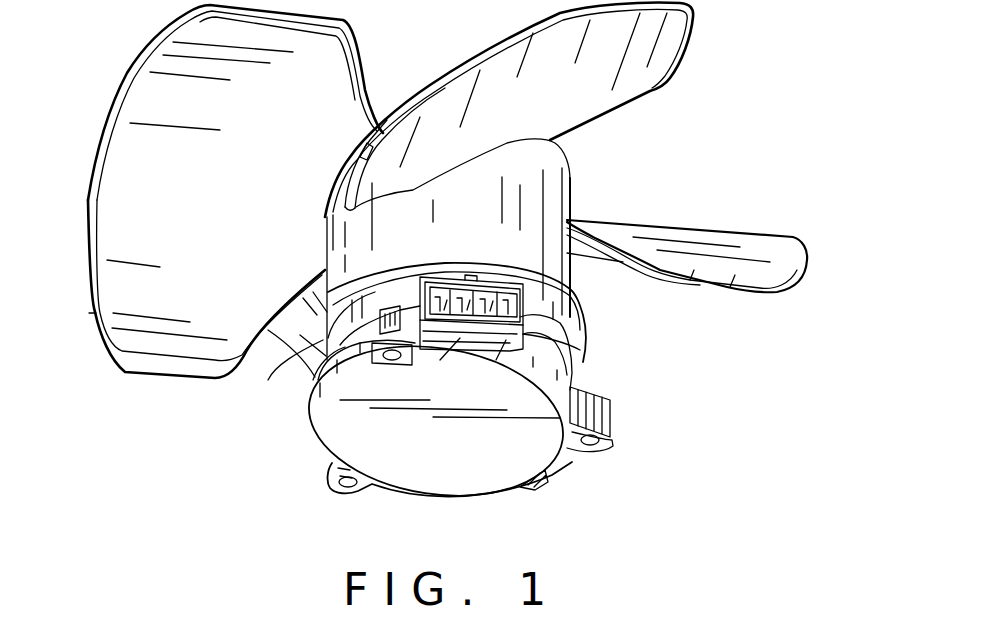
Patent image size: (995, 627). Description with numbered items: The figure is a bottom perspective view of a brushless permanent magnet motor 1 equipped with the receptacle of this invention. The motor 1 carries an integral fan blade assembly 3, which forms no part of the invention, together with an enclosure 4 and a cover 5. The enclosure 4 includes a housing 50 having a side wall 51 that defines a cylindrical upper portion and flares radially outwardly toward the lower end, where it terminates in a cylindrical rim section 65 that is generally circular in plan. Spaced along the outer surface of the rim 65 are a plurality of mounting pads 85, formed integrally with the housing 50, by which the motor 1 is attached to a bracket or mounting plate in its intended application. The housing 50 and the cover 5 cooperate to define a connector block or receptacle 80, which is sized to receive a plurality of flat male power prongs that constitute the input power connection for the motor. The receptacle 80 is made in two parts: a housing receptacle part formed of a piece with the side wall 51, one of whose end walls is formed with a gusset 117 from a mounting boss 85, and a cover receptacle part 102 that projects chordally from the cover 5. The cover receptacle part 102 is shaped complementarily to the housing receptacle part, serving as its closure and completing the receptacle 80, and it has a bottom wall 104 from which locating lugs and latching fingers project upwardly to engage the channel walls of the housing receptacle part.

The brushless permanent magnet motor 1 is at (748, 108).
The integral fan blade assembly 3 is at (557, 187).
The enclosure 4 is at (545, 340).
The cover 5 is at (537, 447).
The housing 50 is at (588, 390).
The side wall 51 is at (323, 332).
The cylindrical rim section 65 is at (312, 387).
The receptacle 80 is at (523, 323).
The mounting pads 85 is at (383, 358).
The cover receptacle part 102 is at (448, 337).
The bottom wall 104 is at (511, 349).
The gusset 117 is at (407, 310).